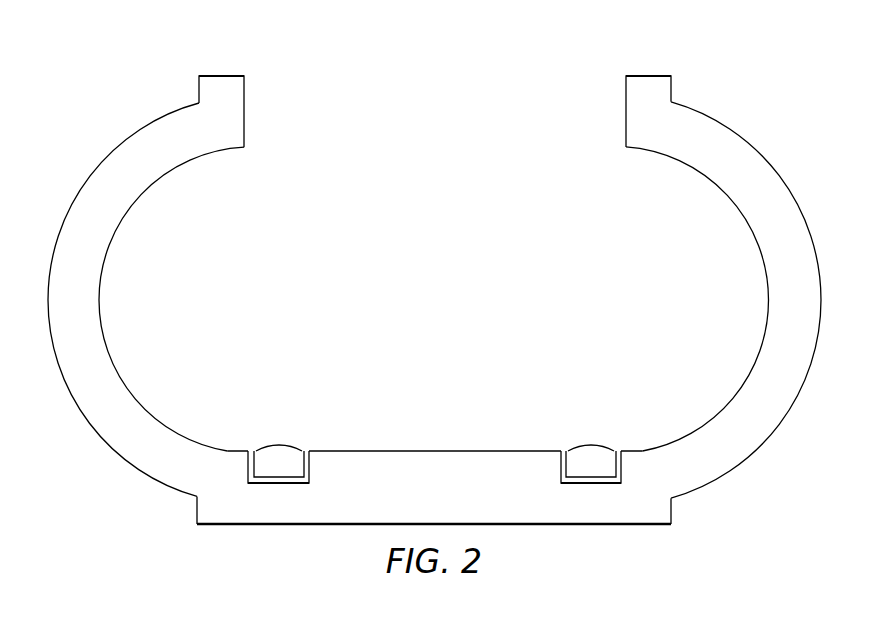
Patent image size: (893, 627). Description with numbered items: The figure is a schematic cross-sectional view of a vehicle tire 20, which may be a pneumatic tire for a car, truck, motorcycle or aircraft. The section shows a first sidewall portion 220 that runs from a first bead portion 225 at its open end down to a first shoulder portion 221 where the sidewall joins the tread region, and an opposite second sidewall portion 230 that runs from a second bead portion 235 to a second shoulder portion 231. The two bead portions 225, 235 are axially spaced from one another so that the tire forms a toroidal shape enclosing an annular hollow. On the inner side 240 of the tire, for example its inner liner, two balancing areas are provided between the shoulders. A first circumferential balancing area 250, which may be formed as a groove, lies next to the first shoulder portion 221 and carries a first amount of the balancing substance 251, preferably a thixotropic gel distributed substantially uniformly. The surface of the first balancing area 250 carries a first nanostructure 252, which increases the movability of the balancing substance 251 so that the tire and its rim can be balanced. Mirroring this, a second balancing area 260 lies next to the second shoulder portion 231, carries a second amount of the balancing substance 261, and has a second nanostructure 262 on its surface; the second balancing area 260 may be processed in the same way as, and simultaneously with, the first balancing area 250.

The vehicle tire 20 is at (424, 42).
The first sidewall portion 220 is at (145, 299).
The first shoulder portion 221 is at (222, 487).
The first bead portion 225 is at (197, 99).
The second sidewall portion 230 is at (725, 300).
The second shoulder portion 231 is at (646, 487).
The second bead portion 235 is at (669, 99).
The inner side 240 is at (450, 460).
The first circumferential balancing area 250 is at (278, 480).
The first amount of the balancing substance 251 is at (279, 436).
The first nanostructure 252 is at (302, 466).
The second balancing area 260 is at (591, 480).
The second amount of the balancing substance 261 is at (591, 436).
The second nanostructure 262 is at (568, 466).